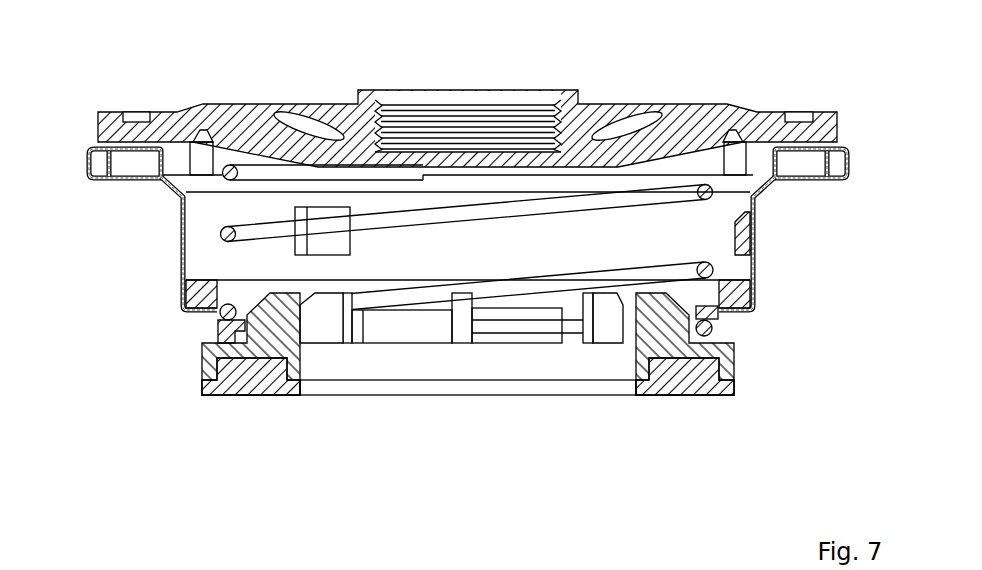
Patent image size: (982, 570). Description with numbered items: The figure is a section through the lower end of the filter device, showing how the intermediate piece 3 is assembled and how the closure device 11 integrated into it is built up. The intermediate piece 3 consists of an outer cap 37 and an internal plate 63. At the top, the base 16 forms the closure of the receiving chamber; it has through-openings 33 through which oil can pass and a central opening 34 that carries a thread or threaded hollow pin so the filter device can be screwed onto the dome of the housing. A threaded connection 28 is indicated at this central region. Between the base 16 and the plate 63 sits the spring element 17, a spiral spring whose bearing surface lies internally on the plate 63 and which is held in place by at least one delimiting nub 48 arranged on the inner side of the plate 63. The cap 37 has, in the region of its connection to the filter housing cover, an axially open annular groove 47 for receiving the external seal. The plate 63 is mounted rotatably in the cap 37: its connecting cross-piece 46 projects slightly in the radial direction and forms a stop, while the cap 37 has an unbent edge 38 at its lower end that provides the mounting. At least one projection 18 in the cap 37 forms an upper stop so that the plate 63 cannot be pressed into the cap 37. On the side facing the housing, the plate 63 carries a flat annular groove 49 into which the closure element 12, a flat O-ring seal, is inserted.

The intermediate piece 3 is at (150, 230).
The closure device 11 is at (518, 425).
The closure element 12 is at (252, 380).
The base 16 is at (738, 103).
The spring element 17 is at (262, 178).
The projection 18 is at (752, 230).
The threaded connection 28 is at (467, 120).
The through-openings 33 is at (608, 128).
The central opening 34 is at (448, 380).
The cap 37 is at (168, 270).
The unbent edge 38 is at (737, 313).
The connecting cross-piece 46 is at (755, 295).
The annular groove 47 is at (798, 167).
The delimiting nub 48 is at (328, 317).
The flat annular groove 49 is at (677, 380).
The plate 63 is at (190, 365).